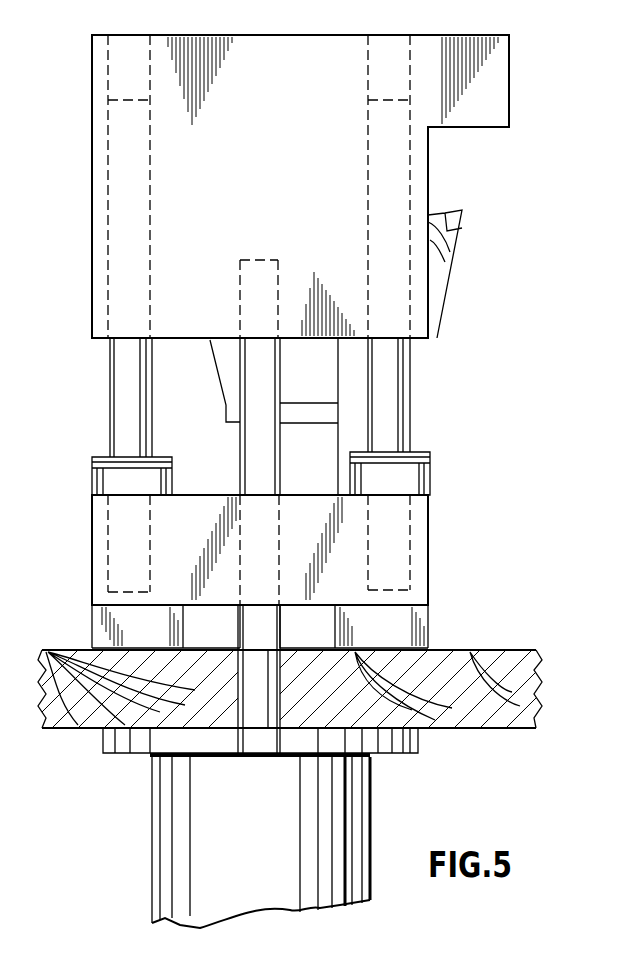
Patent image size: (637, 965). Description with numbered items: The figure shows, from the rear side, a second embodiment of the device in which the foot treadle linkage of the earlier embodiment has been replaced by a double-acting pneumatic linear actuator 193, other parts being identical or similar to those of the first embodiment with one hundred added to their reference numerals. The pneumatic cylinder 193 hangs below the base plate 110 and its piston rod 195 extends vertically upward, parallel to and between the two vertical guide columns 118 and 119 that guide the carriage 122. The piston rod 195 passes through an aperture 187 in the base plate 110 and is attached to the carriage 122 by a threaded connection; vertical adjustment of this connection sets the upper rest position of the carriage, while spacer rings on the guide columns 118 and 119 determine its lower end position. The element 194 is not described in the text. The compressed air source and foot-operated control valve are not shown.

The carriage 122 is at (92, 212).
The vertical guide column 119 is at (112, 383).
The vertical guide column 118 is at (395, 366).
The piston rod 195 is at (258, 459).
The base plate 110 is at (430, 575).
The aperture 187 is at (240, 523).
The base plate 194 is at (494, 655).
The double-acting pneumatic linear actuator 193 is at (350, 820).